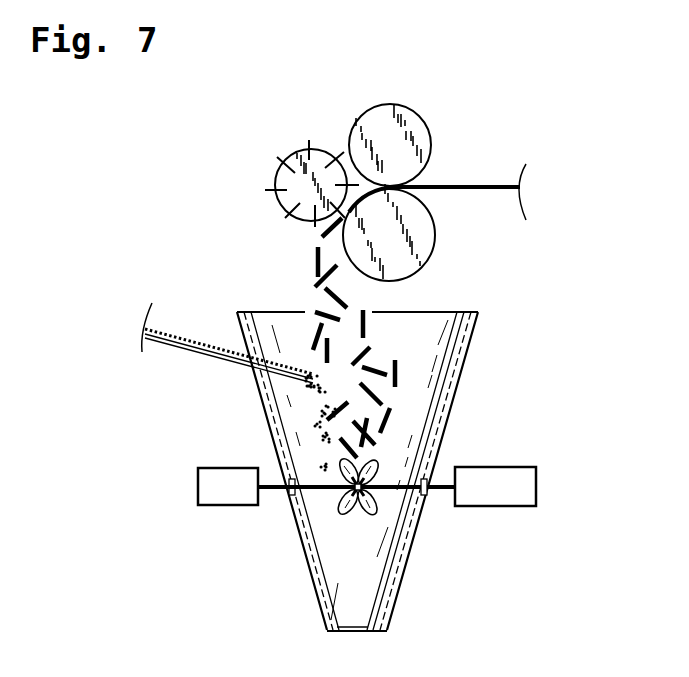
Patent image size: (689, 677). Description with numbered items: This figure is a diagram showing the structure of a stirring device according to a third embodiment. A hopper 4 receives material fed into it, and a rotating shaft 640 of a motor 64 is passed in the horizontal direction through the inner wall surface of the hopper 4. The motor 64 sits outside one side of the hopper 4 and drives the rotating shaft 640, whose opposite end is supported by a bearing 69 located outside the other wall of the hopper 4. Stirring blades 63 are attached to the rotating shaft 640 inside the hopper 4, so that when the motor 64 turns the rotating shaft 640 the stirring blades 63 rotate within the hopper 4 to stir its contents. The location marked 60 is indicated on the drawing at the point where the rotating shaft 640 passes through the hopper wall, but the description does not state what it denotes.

The hopper 4 is at (455, 400).
The rotating shaft 640 is at (393, 487).
The motor 64 is at (525, 488).
The bearing 69 is at (209, 488).
The stirring blades 63 is at (345, 505).
The stirrer 60 is at (436, 509).